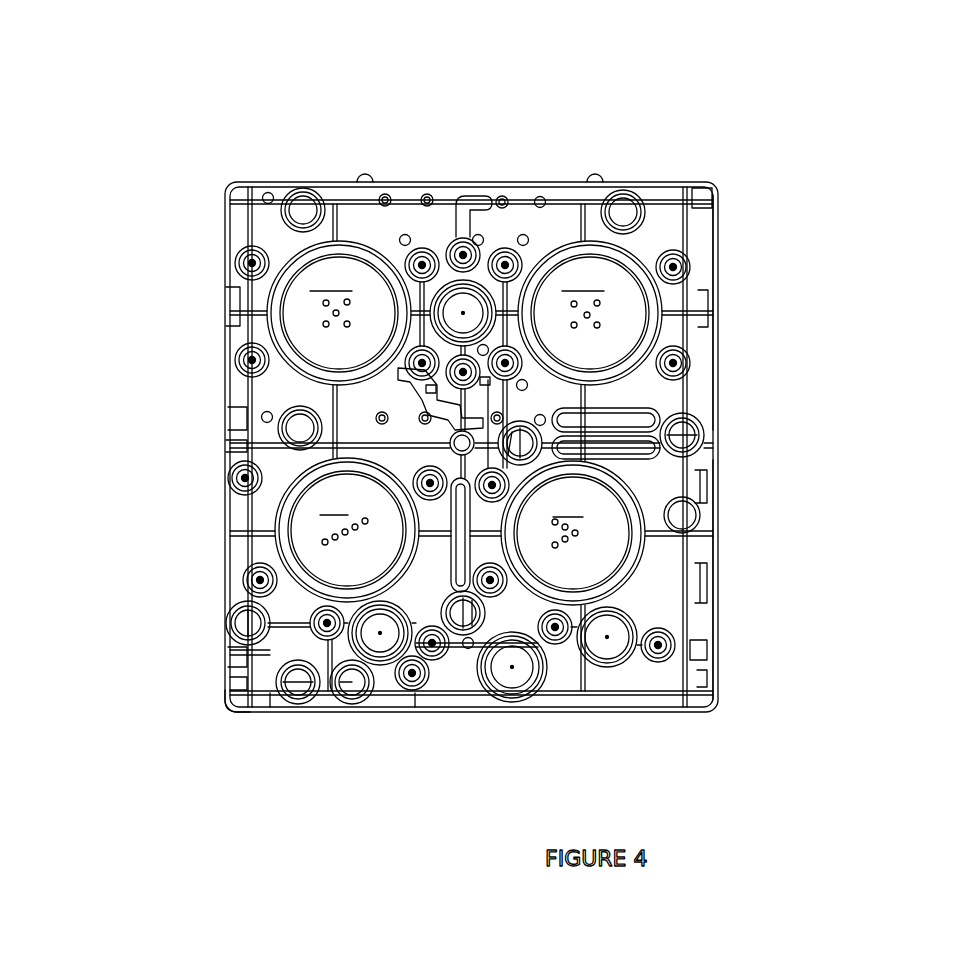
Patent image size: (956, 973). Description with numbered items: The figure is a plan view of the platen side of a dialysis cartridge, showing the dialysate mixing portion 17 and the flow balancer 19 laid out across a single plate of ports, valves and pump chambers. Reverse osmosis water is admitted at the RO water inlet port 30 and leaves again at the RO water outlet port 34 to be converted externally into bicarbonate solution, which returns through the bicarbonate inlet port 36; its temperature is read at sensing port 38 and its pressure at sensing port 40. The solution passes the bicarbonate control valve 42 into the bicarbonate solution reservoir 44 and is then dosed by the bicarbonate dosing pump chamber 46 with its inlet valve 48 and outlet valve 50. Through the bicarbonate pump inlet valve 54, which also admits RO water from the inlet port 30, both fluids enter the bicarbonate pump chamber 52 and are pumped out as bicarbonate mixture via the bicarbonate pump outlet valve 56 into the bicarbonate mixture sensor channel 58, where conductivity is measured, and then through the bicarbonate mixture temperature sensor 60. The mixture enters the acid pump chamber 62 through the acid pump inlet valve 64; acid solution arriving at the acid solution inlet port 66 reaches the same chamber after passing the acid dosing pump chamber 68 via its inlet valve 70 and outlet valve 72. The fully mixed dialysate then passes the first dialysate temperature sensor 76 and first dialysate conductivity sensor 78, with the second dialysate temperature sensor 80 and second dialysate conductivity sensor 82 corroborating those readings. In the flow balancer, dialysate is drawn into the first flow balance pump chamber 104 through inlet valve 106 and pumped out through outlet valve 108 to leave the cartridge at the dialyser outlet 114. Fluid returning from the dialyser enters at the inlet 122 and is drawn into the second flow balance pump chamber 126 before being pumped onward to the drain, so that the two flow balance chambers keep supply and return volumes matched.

The dialyser outlet 114 is at (232, 188).
The inlet valve 106 is at (423, 353).
The inlet 122 is at (698, 192).
The outlet valve 108 is at (248, 262).
The second dialysate conductivity sensor 82 is at (610, 415).
The flow balancer 19 is at (730, 193).
The first dialysate temperature sensor 76 is at (517, 447).
The second dialysate temperature sensor 80 is at (690, 433).
The RO water outlet port 34 is at (232, 455).
The first dialysate conductivity sensor 78 is at (620, 448).
The bicarbonate pump outlet valve 56 is at (428, 478).
The bicarbonate mixture sensor channel 58 is at (460, 548).
The bicarbonate pump inlet valve 54 is at (255, 577).
The dialysate mixing portion 17 is at (720, 460).
The acid pump inlet valve 64 is at (492, 580).
The bicarbonate dosing pump chamber 46 is at (385, 625).
The bicarbonate mixture temperature sensor 60 is at (478, 613).
The RO water inlet port 30 is at (243, 618).
The acid solution inlet port 66 is at (705, 650).
The outlet valve 50 is at (320, 628).
The bicarbonate inlet port 36 is at (232, 700).
The sensing port 38 is at (298, 690).
The sensing port 40 is at (355, 693).
The bicarbonate control valve 42 is at (415, 675).
The inlet valve 48 is at (435, 645).
The bicarbonate solution reservoir 44 is at (513, 677).
The outlet valve 72 is at (555, 630).
The acid dosing pump chamber 68 is at (608, 638).
The acid dosing pump chamber inlet valve 70 is at (660, 647).
The first flow balance pump chamber 104 is at (339, 313).
The second flow balance pump chamber 126 is at (590, 313).
The bicarbonate pump chamber 52 is at (347, 530).
The acid pump chamber 62 is at (573, 533).